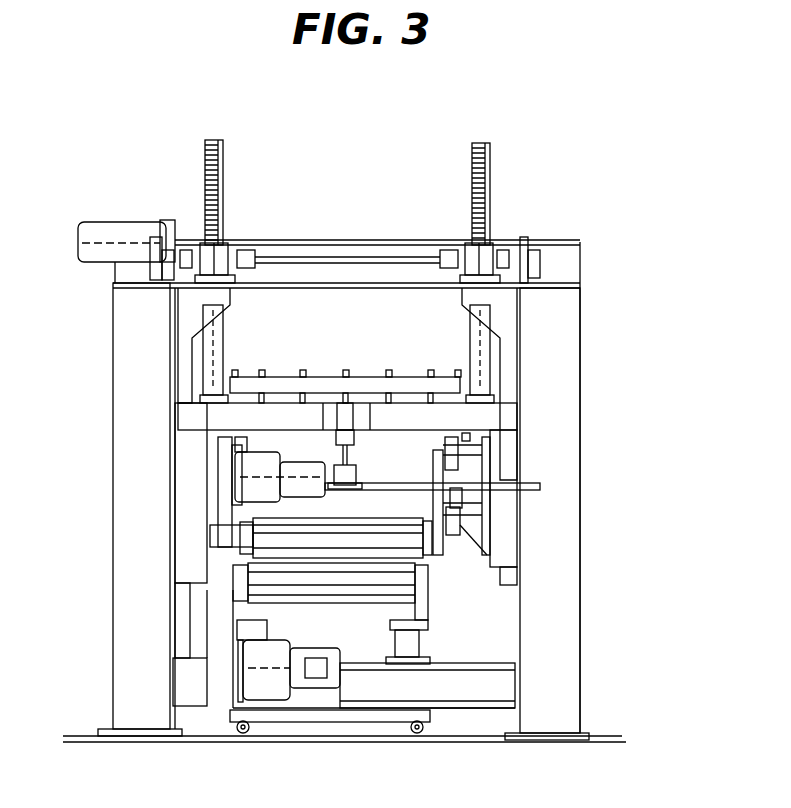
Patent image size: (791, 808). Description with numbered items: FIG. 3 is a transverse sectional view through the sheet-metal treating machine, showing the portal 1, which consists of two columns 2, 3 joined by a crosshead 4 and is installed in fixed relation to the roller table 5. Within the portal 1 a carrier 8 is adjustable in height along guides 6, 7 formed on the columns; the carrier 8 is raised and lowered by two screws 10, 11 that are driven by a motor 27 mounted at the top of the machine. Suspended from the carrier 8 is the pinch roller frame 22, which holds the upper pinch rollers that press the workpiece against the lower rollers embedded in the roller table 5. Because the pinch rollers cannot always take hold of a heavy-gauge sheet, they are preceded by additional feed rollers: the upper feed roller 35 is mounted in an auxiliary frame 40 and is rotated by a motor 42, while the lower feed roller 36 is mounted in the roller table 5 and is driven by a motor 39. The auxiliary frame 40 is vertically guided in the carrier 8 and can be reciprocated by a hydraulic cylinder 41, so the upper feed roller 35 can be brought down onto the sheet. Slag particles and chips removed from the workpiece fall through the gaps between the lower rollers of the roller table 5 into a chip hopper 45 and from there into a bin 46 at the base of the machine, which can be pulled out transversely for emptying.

The portal 1 is at (590, 490).
The column 2 is at (133, 407).
The column 3 is at (553, 324).
The crosshead 4 is at (565, 270).
The roller table 5 is at (262, 606).
The guide 6 is at (183, 361).
The guide 7 is at (510, 367).
The carrier 8 is at (437, 418).
The screw 10 is at (217, 172).
The screw 11 is at (489, 178).
The pinch roller frame 22 is at (452, 547).
The motor 27 is at (98, 240).
The upper feed roller 35 is at (295, 540).
The lower feed roller 36 is at (428, 573).
The motor 39 is at (305, 683).
The auxiliary frame 40 is at (470, 497).
The hydraulic cylinder 41 is at (355, 437).
The motor 42 is at (247, 483).
The chip hopper 45 is at (370, 640).
The bin 46 is at (357, 713).